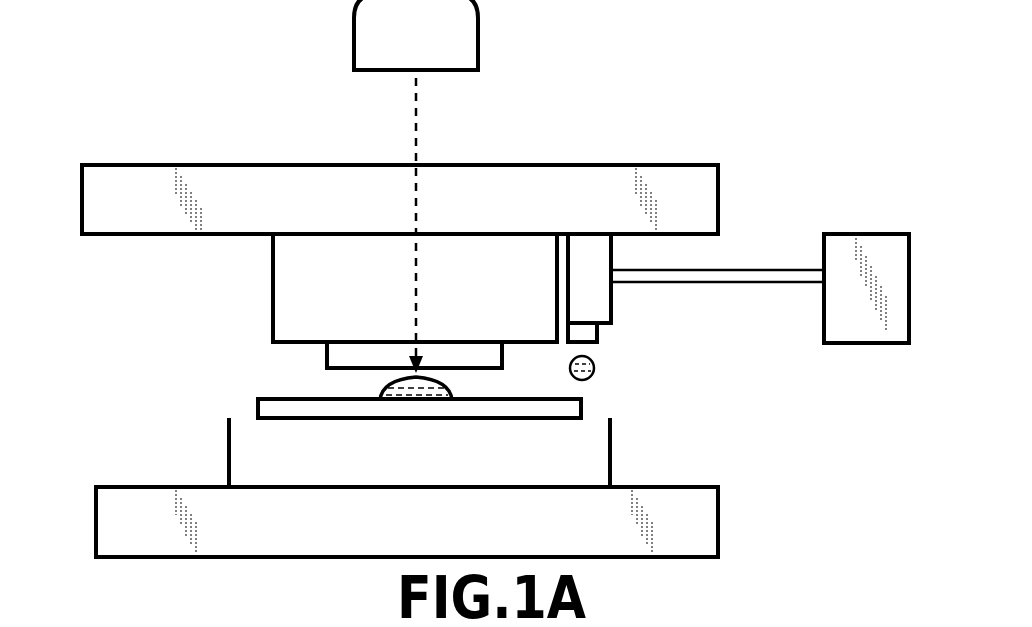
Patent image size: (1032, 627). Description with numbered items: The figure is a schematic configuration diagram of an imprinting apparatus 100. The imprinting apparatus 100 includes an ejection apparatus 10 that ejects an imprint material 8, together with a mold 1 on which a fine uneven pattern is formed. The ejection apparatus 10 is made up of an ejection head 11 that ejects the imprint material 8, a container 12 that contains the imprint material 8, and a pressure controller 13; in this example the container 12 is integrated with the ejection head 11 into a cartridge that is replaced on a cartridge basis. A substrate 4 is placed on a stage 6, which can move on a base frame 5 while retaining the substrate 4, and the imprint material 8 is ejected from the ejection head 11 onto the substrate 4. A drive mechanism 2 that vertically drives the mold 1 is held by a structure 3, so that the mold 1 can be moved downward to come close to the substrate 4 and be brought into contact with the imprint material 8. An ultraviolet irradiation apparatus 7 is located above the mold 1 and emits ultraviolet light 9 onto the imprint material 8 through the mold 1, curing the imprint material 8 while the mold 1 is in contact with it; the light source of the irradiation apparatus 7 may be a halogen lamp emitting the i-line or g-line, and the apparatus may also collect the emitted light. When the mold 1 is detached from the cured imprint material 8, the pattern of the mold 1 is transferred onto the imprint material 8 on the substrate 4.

The imprinting apparatus 100 is at (659, 65).
The mold 1 is at (327, 352).
The drive mechanism 2 is at (273, 292).
The structure 3 is at (82, 197).
The substrate 4 is at (258, 404).
The base frame 5 is at (98, 518).
The stage 6 is at (229, 450).
The ultraviolet irradiation apparatus 7 is at (478, 40).
The imprint material 8 is at (440, 392).
The ultraviolet light 9 is at (420, 113).
The ejection apparatus 10 is at (914, 368).
The ejection head 11 is at (598, 332).
The container 12 is at (612, 309).
The pressure controller 13 is at (824, 306).